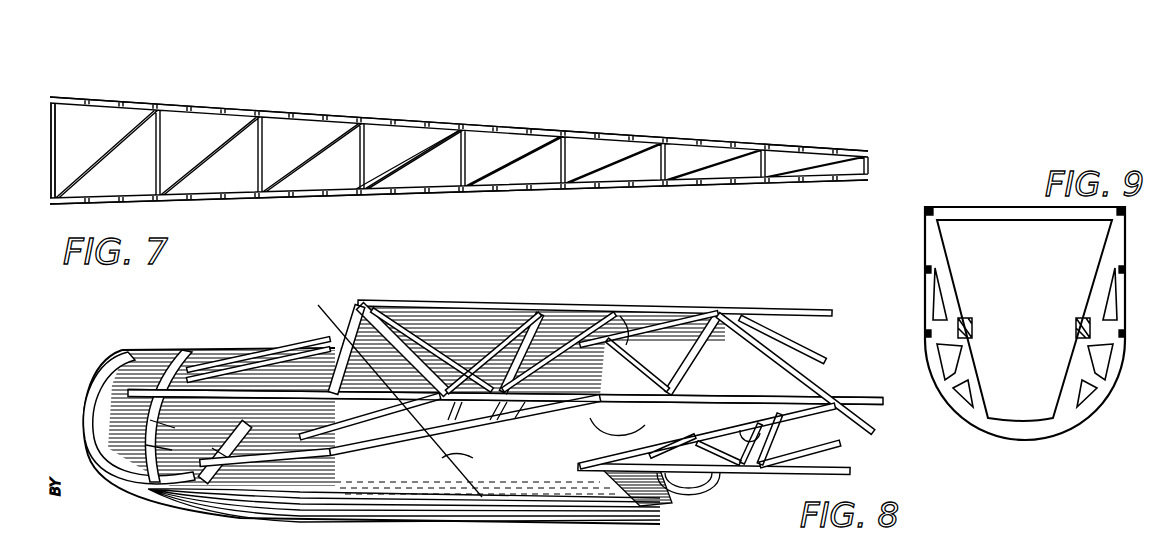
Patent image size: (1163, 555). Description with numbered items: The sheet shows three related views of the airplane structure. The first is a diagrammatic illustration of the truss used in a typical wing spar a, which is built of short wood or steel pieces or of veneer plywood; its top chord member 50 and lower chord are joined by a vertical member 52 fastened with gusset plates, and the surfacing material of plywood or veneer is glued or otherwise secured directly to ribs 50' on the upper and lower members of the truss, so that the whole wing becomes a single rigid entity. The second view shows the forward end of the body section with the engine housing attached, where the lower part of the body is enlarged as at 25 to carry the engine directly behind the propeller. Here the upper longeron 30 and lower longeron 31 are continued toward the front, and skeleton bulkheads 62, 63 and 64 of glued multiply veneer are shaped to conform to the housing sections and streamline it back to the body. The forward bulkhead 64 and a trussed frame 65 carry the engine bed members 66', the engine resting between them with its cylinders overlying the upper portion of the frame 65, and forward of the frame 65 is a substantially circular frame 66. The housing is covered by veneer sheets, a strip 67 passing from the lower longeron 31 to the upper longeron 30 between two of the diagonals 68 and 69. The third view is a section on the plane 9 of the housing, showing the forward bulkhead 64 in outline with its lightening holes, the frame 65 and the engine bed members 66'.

In FIG. 7, the top chord member 50 is at (459, 150).
In FIG. 7, the ribs 50' is at (459, 151).
In FIG. 7, the vertical member 52 is at (55, 168).
In FIG. 7, the spar a is at (408, 172).
In FIG. 8, the sectional plane 9 is at (310, 309).
In FIG. 8, the enlarged lower part of the body portion 25 is at (401, 436).
In FIG. 8, the upper longeron 30 is at (787, 311).
In FIG. 8, the lower longeron 31 is at (593, 407).
In FIG. 8, the skeleton bulkhead 62 is at (787, 380).
In FIG. 8, the skeleton bulkhead 63 is at (627, 373).
In FIG. 9, the forward bulkhead 64 is at (1024, 320).
In FIG. 8, the forward bulkhead 64 is at (397, 333).
In FIG. 9, the frame 65 is at (1075, 390).
In FIG. 8, the frame 65 is at (247, 423).
In FIG. 8, the circular frame 66 is at (139, 410).
In FIG. 9, the engine bed members 66' is at (1024, 320).
In FIG. 8, the engine bed members 66' is at (505, 378).
In FIG. 8, the veneer strip 67 is at (627, 320).
In FIG. 9, the diagonal 68 is at (925, 335).
In FIG. 8, the diagonal 68 is at (469, 463).
In FIG. 8, the diagonal 69 is at (750, 437).